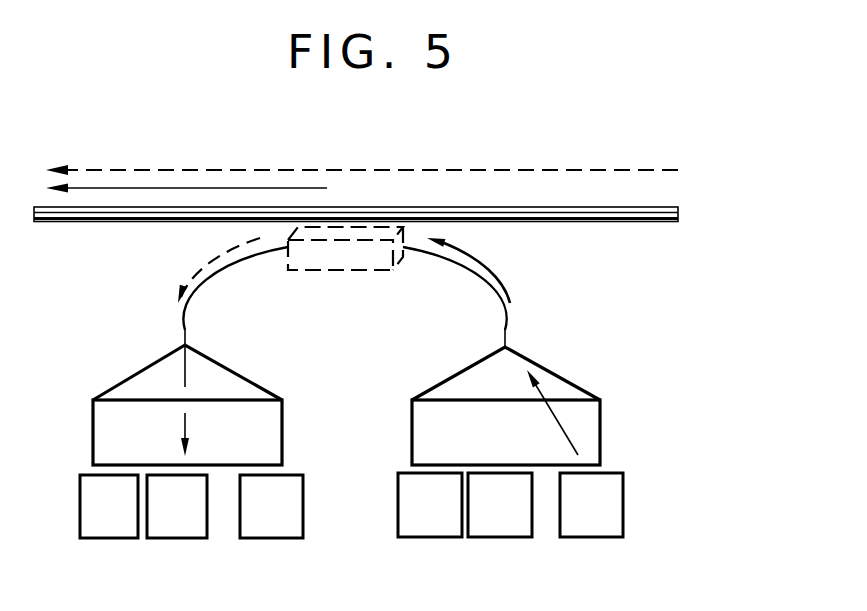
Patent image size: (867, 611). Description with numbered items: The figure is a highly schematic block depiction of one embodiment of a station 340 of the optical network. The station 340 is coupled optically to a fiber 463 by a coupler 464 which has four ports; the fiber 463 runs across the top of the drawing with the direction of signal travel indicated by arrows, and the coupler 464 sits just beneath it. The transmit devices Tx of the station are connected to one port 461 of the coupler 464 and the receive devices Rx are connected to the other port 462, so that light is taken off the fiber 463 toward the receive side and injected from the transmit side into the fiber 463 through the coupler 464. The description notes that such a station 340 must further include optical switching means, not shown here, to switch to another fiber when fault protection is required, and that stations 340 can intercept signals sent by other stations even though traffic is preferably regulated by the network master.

The station 340 is at (546, 150).
The port 461 is at (186, 327).
The port 462 is at (507, 325).
The fiber 463 is at (608, 218).
The coupler 464 is at (342, 258).